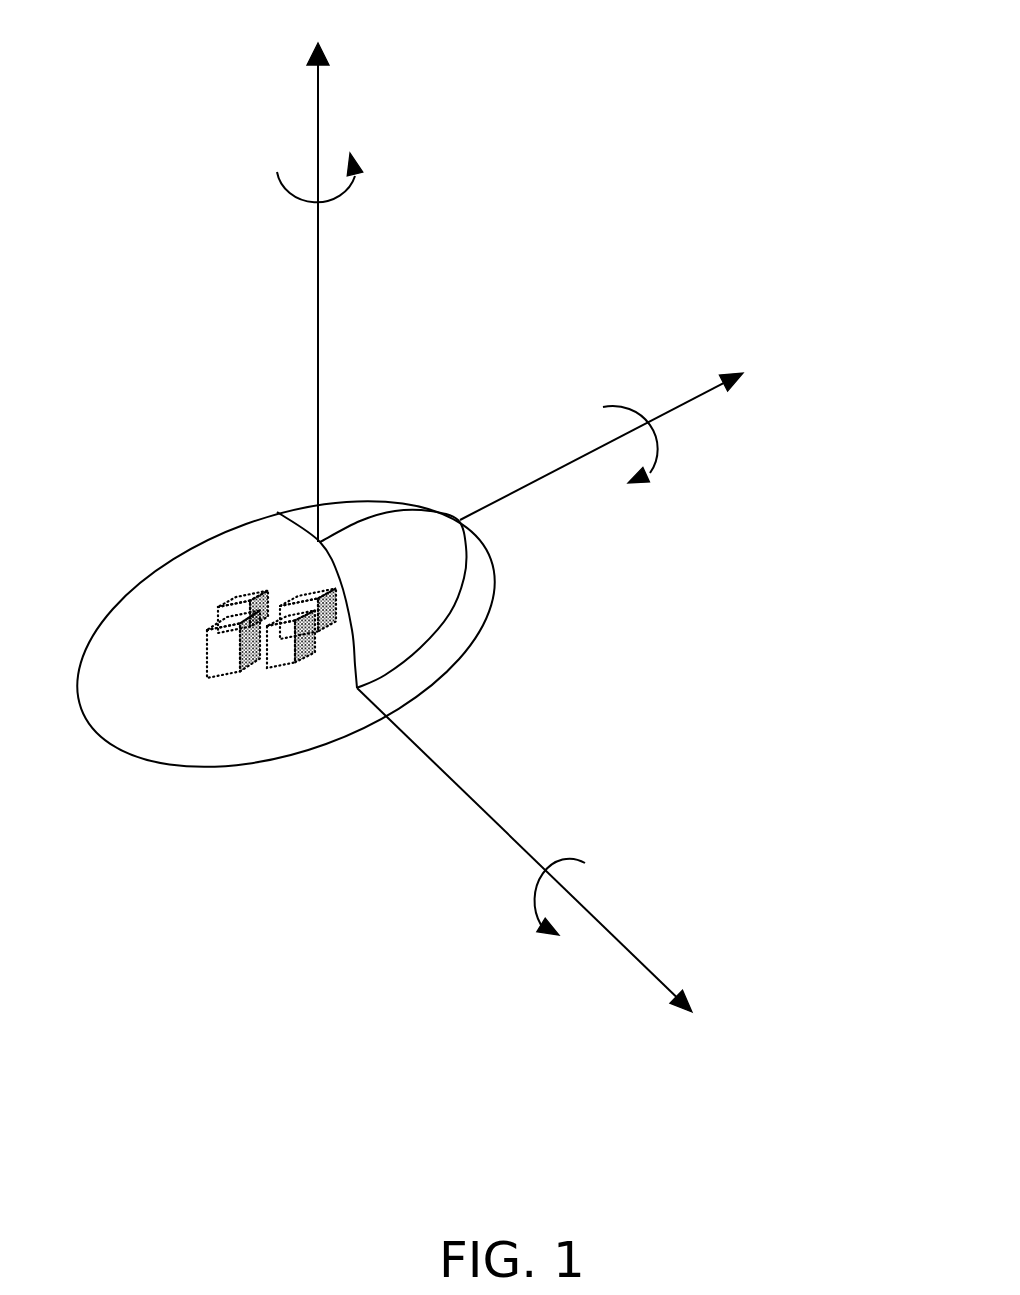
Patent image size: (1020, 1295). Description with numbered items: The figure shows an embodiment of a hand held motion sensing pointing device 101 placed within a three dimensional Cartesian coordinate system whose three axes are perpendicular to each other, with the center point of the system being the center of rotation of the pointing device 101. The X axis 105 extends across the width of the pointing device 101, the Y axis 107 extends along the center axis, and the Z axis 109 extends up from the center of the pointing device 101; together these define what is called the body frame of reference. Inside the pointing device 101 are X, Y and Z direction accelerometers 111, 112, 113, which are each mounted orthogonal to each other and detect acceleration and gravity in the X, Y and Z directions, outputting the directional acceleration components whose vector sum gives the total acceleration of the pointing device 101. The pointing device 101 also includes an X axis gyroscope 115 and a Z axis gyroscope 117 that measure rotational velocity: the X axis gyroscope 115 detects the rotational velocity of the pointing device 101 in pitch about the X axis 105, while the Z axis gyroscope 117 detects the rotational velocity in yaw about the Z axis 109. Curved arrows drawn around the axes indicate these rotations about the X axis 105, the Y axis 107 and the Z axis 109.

The pointing device 101 is at (463, 617).
The X axis 105 is at (498, 828).
The Y axis 107 is at (547, 478).
The Z axis 109 is at (315, 280).
The X direction accelerometer 111 is at (267, 595).
The Y direction accelerometer 112 is at (335, 628).
The Z direction accelerometer 113 is at (283, 647).
The X axis gyroscope 115 is at (210, 628).
The Z axis gyroscope 117 is at (227, 653).